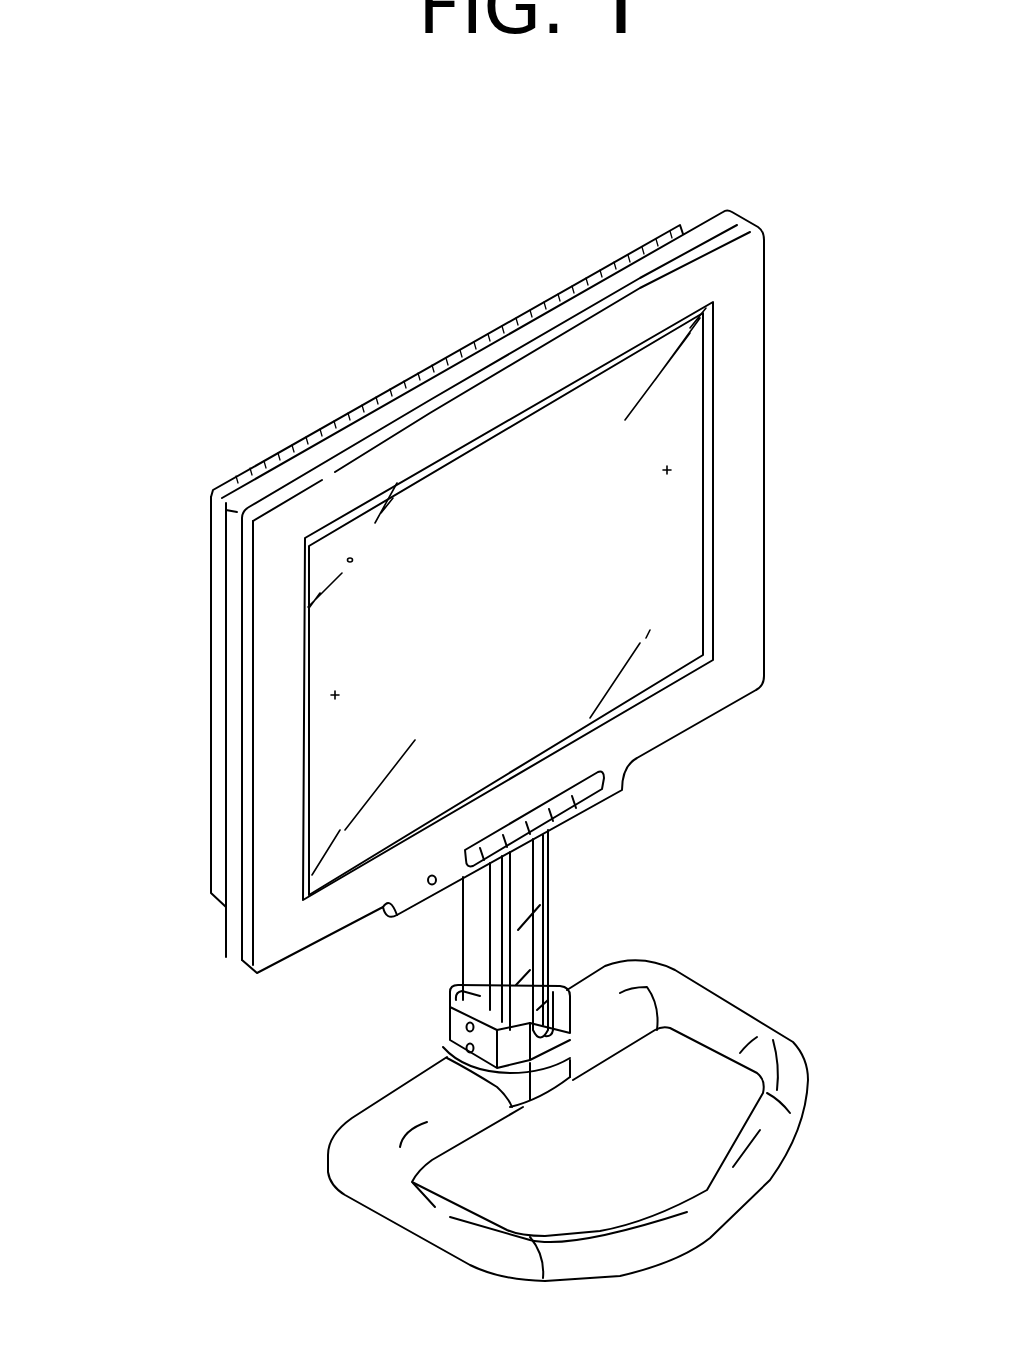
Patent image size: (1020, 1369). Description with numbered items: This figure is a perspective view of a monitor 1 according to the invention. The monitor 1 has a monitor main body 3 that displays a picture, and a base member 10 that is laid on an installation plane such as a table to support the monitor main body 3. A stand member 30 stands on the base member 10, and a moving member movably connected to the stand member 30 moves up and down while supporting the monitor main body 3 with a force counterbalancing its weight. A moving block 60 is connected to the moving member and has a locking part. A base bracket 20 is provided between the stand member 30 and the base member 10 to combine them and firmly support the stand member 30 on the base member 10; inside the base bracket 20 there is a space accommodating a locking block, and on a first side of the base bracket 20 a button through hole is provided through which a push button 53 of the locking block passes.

The monitor 1 is at (102, 390).
The monitor main body 3 is at (745, 323).
The base member 10 is at (715, 1027).
The base bracket 20 is at (570, 997).
The stand member 30 is at (523, 884).
The push button 53 is at (573, 1070).
The moving block 60 is at (452, 1002).